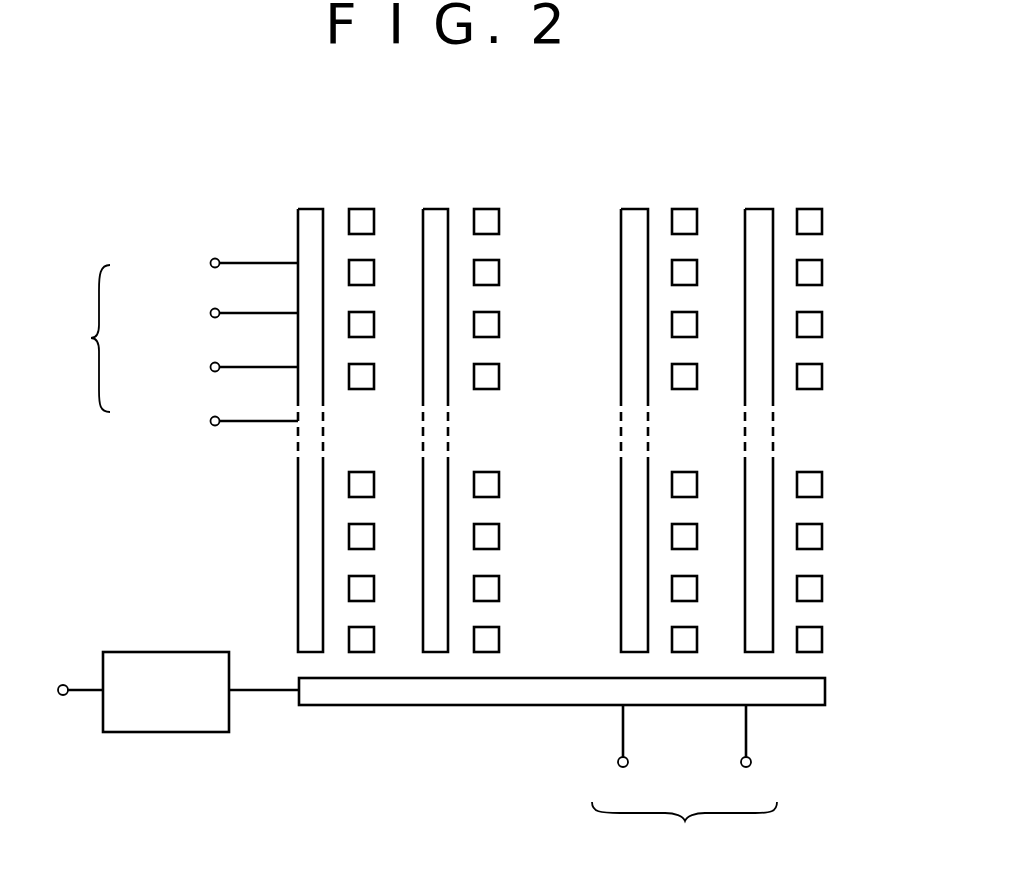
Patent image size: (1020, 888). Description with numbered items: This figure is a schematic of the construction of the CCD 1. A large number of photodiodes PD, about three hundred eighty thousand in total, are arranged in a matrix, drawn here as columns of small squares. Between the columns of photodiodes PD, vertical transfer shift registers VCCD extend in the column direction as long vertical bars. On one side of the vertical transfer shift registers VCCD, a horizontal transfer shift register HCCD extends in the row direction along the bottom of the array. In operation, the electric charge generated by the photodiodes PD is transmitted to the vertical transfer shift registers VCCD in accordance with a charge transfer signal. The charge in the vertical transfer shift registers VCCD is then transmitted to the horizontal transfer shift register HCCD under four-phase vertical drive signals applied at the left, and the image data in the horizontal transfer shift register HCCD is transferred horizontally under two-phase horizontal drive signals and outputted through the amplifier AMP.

The CCD 1 is at (654, 128).
The vertical transfer shift register VCCD is at (535, 396).
The photodiode PD is at (618, 410).
The horizontal transfer shift register HCCD is at (405, 693).
The amplifier AMP is at (178, 692).